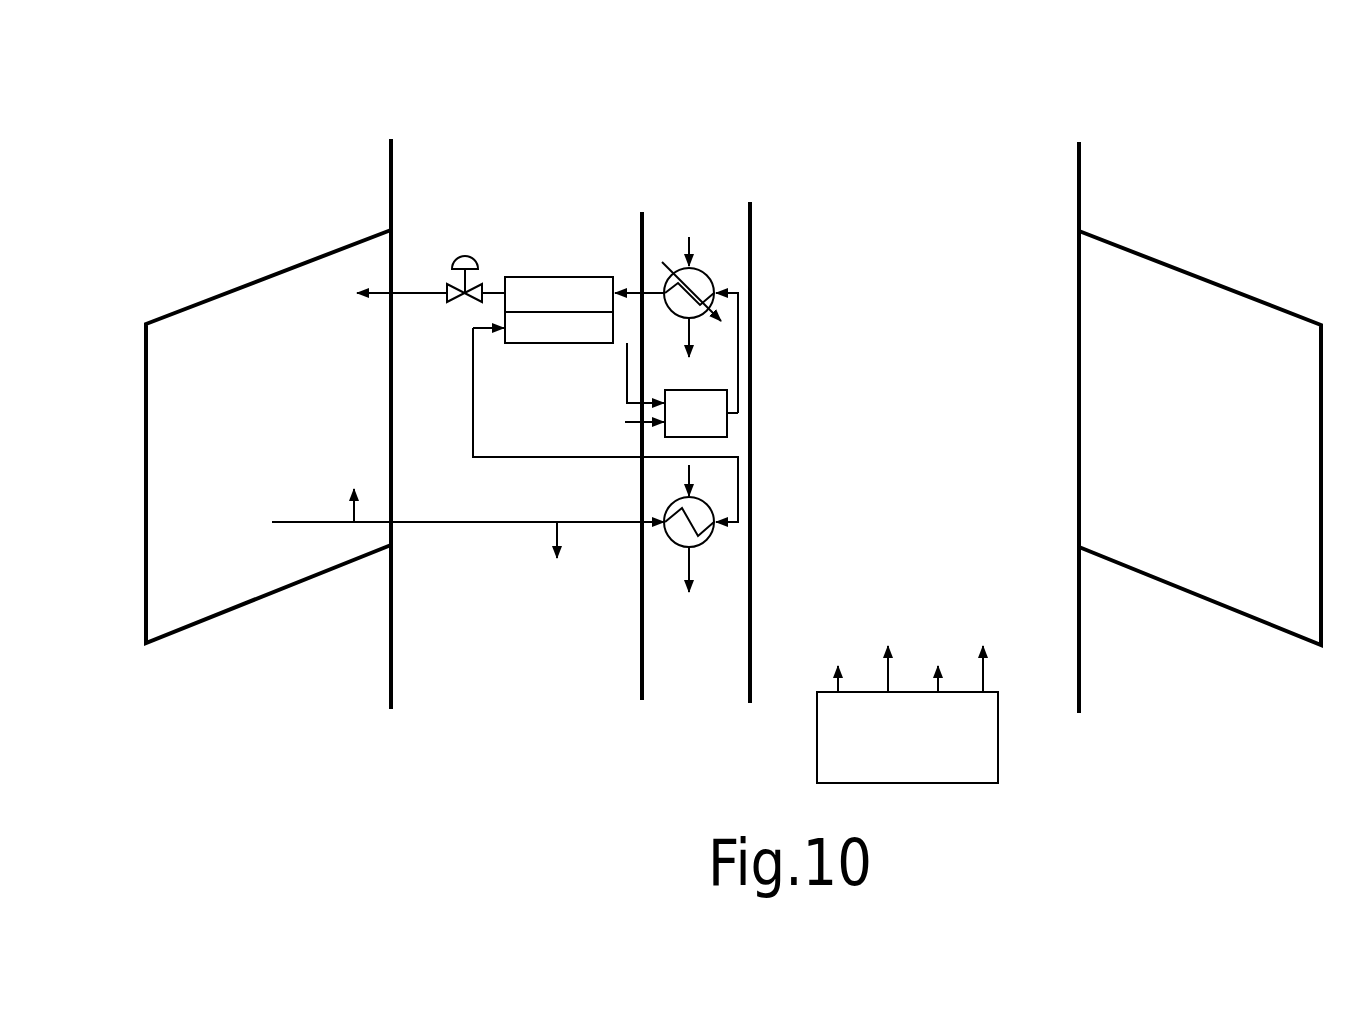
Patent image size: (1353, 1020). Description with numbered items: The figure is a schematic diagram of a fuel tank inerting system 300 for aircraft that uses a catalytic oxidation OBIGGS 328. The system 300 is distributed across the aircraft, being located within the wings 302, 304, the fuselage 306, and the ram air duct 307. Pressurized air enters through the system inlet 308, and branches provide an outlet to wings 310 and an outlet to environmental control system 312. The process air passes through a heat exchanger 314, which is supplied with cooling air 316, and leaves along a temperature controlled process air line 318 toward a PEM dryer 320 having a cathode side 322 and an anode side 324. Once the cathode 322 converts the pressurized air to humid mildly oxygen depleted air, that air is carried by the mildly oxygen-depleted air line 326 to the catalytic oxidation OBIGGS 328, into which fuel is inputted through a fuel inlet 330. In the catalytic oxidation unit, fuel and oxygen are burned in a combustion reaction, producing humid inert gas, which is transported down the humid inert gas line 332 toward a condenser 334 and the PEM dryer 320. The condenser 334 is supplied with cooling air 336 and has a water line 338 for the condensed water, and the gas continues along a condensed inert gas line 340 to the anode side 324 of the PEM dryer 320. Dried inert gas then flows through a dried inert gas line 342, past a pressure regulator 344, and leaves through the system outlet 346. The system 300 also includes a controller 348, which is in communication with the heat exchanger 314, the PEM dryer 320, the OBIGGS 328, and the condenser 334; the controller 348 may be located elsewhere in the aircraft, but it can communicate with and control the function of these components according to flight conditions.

The fuel tank inerting system 300 is at (1013, 118).
The wing 302 is at (230, 361).
The wing 304 is at (1226, 403).
The fuselage 306 is at (527, 181).
The ram air duct 307 is at (717, 667).
The system inlet 308 is at (318, 520).
The outlet to wings 310 is at (357, 512).
The outlet to environmental control system 312 is at (560, 535).
The heat exchanger 314 is at (718, 546).
The cooling air 316 is at (688, 475).
The temperature controlled process air line 318 is at (474, 418).
The PEM dryer 320 is at (550, 258).
The cathode side 322 is at (581, 341).
The anode side 324 is at (581, 307).
The mildly oxygen-depleted air line 326 is at (627, 390).
The catalytic oxidation OBIGGS 328 is at (718, 428).
The fuel inlet 330 is at (621, 425).
The humid inert gas line 332 is at (740, 344).
The condenser 334 is at (720, 244).
The cooling air 336 is at (689, 284).
The water line 338 is at (663, 262).
The condensed inert gas line 340 is at (635, 292).
The dried inert gas line 342 is at (492, 291).
The pressure regulator 344 is at (458, 244).
The system outlet 346 is at (411, 298).
The controller 348 is at (932, 750).